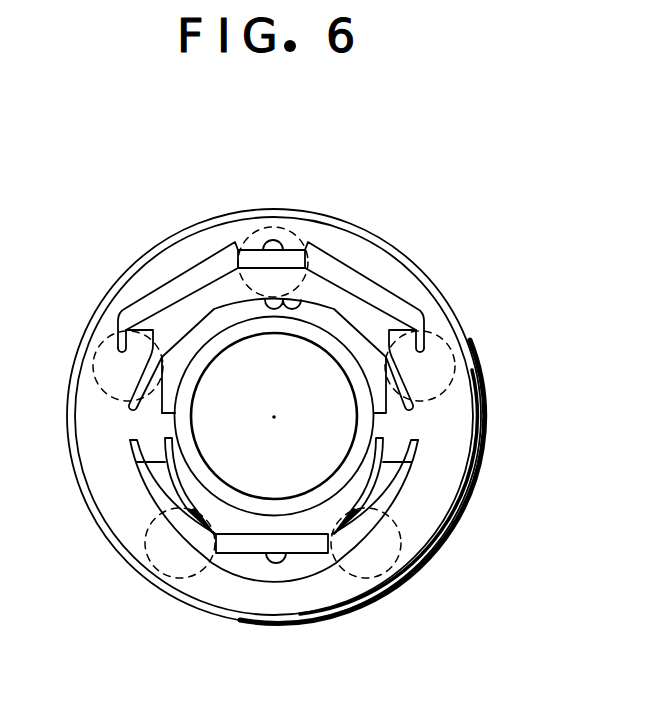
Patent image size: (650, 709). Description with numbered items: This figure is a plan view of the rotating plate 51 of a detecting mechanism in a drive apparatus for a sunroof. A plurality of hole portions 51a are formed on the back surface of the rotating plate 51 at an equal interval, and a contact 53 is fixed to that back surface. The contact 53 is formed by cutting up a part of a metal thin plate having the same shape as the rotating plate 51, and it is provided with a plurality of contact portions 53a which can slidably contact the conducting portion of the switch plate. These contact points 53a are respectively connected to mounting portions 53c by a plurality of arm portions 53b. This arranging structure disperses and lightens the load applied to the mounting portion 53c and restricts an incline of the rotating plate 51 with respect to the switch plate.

The rotating plate 51 is at (452, 272).
The hole portions 51a is at (468, 364).
The contact 53 is at (424, 526).
The contact portions 53a is at (268, 238).
The arm portions 53b is at (188, 290).
The mounting portions 53c is at (437, 495).